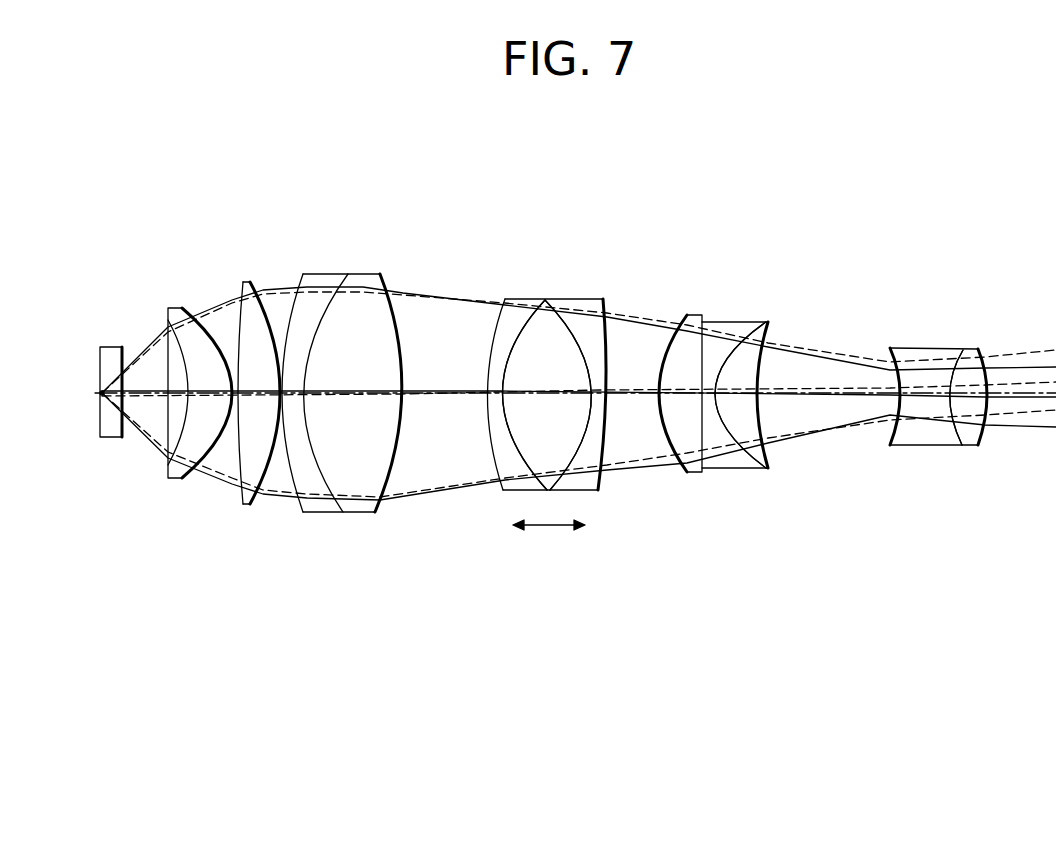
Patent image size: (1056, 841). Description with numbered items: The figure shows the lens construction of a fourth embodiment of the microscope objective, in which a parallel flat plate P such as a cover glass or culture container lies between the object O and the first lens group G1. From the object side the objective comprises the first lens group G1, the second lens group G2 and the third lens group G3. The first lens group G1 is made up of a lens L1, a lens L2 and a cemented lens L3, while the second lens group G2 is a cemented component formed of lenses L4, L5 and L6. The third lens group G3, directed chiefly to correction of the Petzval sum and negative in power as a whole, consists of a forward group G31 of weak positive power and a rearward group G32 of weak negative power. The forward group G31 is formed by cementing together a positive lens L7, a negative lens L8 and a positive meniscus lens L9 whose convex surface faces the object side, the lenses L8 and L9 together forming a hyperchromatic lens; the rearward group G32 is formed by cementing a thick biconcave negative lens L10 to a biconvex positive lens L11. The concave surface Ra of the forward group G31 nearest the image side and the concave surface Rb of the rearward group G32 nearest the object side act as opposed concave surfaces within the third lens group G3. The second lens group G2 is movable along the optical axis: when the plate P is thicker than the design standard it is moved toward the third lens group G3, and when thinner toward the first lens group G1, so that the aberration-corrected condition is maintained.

The object O is at (100, 393).
The parallel flat plate P is at (112, 347).
The first lens group G1 is at (372, 221).
The second lens group G2 is at (630, 221).
The third lens group G3 is at (995, 213).
The forward group of the third lens group G31 is at (682, 270).
The rearward group of the third lens group G32 is at (893, 270).
The first lens L1 is at (178, 308).
The second lens L2 is at (246, 282).
The third lens L3 is at (388, 272).
The fourth lens L4 is at (518, 299).
The fifth lens L5 is at (545, 300).
The sixth lens L6 is at (598, 300).
The positive lens L7 is at (697, 315).
The negative lens L8 is at (733, 322).
The positive meniscus lens L9 is at (764, 371).
The thick biconcave negative lens L10 is at (914, 384).
The biconvex positive lens L11 is at (975, 350).
The concave surface of the forward group Ra is at (762, 415).
The concave surface of the rearward group Rb is at (891, 430).